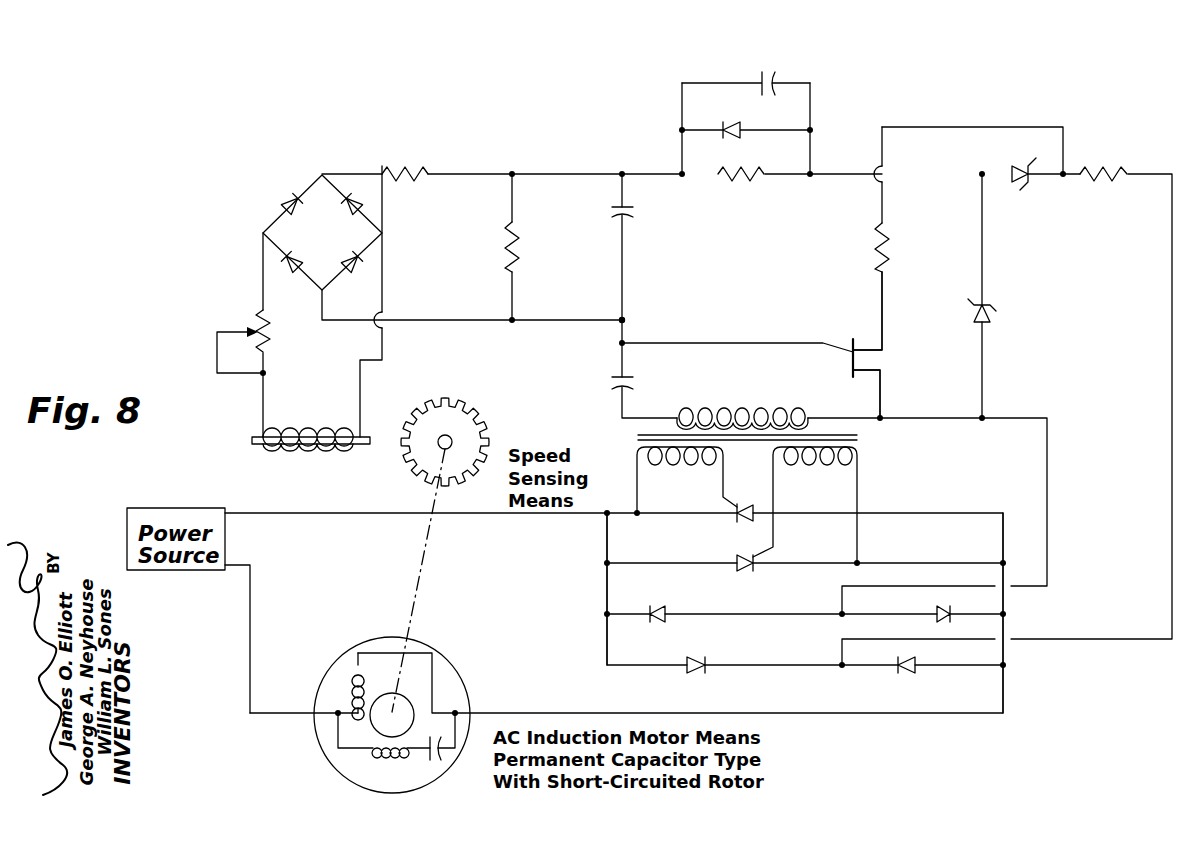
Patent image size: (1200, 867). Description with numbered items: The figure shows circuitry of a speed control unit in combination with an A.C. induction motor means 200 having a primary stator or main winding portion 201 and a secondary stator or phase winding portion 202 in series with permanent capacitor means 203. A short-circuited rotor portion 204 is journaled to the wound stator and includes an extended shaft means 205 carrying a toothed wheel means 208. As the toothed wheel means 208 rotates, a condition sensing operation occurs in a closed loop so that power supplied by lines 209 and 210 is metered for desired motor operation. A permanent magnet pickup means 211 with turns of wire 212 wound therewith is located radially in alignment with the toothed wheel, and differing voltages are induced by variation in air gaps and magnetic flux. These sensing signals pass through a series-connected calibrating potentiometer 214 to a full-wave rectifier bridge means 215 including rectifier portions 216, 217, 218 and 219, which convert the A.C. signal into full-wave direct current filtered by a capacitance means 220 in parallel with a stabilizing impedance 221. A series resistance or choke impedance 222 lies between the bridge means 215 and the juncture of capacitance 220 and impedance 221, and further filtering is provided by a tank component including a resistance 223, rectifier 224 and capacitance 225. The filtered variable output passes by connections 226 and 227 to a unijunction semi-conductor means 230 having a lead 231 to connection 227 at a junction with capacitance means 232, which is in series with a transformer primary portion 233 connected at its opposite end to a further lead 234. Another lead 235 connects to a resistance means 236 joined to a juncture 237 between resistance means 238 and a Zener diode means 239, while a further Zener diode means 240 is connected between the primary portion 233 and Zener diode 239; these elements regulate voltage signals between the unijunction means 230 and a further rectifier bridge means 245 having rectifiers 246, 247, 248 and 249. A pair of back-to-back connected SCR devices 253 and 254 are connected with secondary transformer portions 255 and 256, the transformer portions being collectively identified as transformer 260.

The A.C. induction motor means 200 is at (447, 656).
The main winding portion 201 is at (352, 692).
The phase winding portion 202 is at (380, 755).
The permanent capacitor means 203 is at (436, 764).
The short-circuited rotor portion 204 is at (410, 712).
The extended shaft means 205 is at (430, 565).
The toothed wheel means 208 is at (470, 408).
The power line 209 is at (256, 572).
The power line 210 is at (250, 516).
The permanent magnet pickup means 211 is at (365, 447).
The turns of wire 212 is at (292, 449).
The calibrating potentiometer 214 is at (270, 336).
The full-wave rectifier bridge means 215 is at (262, 222).
The rectifier 216 is at (292, 200).
The rectifier 217 is at (362, 205).
The rectifier 218 is at (357, 264).
The rectifier 219 is at (288, 262).
The capacitance means 220 is at (630, 214).
The stabilizing resistance 221 is at (520, 248).
The series resistance 222 is at (410, 170).
The resistance 223 is at (747, 180).
The rectifier 224 is at (734, 128).
The capacitance 225 is at (776, 82).
The connection 226 is at (840, 173).
The connection 227 is at (627, 322).
The unijunction semi-conductor means 230 is at (850, 347).
The lead 231 is at (762, 345).
The capacitance means 232 is at (612, 404).
The transformer primary portion 233 is at (738, 410).
The lead 234 is at (884, 397).
The lead 235 is at (884, 334).
The resistance means 236 is at (888, 248).
The juncture 237 is at (1063, 180).
The resistance means 238 is at (1104, 170).
The Zener diode means 239 is at (1015, 165).
The Zener diode means 240 is at (993, 318).
The rectifier bridge means 245 is at (790, 647).
The rectifier 246 is at (700, 673).
The rectifier 247 is at (906, 673).
The rectifier 248 is at (940, 621).
The rectifier 249 is at (655, 607).
The SCR device 253 is at (742, 504).
The SCR device 254 is at (748, 570).
The secondary transformer portion 255 is at (686, 470).
The secondary transformer portion 256 is at (819, 468).
The transformer portions 260 is at (862, 440).